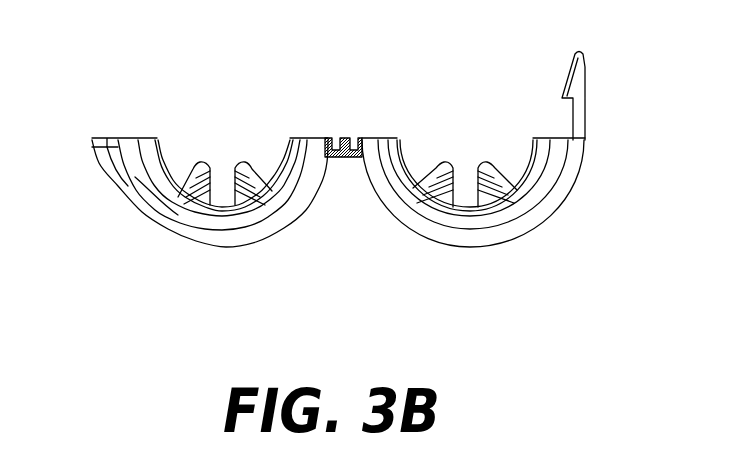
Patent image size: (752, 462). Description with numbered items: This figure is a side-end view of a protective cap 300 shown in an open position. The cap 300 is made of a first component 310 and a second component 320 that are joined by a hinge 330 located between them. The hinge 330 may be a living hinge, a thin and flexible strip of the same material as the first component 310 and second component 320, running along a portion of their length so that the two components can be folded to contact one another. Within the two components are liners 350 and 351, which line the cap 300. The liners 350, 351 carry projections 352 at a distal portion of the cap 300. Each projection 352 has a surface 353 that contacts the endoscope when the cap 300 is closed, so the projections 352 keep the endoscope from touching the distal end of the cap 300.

The cap 300 is at (344, 199).
The first component 310 is at (189, 239).
The second component 320 is at (500, 214).
The hinge 330 is at (342, 158).
The liner 350 is at (145, 178).
The liner 351 is at (548, 176).
The projections 352 is at (185, 195).
The surface 353 is at (199, 161).